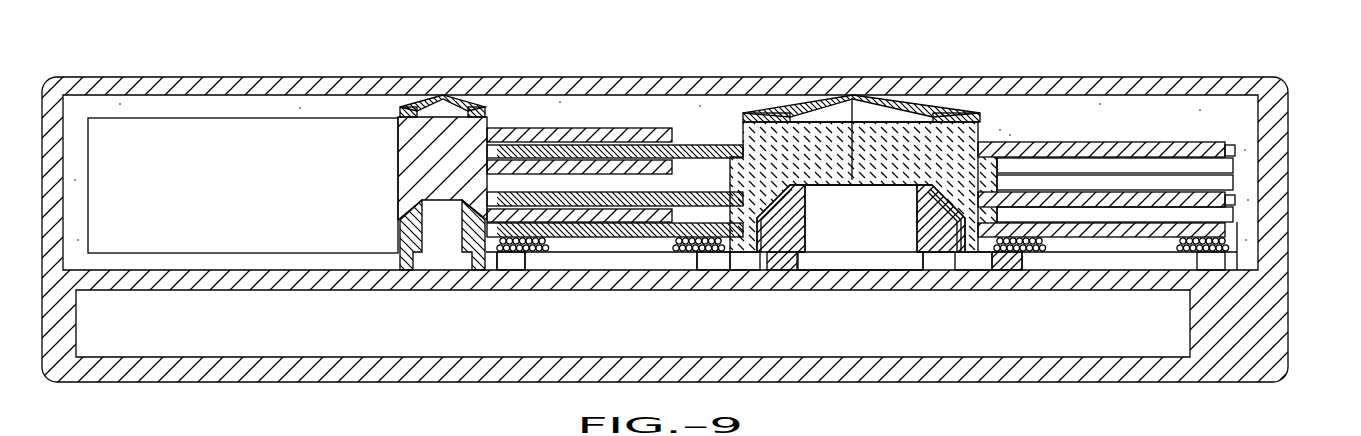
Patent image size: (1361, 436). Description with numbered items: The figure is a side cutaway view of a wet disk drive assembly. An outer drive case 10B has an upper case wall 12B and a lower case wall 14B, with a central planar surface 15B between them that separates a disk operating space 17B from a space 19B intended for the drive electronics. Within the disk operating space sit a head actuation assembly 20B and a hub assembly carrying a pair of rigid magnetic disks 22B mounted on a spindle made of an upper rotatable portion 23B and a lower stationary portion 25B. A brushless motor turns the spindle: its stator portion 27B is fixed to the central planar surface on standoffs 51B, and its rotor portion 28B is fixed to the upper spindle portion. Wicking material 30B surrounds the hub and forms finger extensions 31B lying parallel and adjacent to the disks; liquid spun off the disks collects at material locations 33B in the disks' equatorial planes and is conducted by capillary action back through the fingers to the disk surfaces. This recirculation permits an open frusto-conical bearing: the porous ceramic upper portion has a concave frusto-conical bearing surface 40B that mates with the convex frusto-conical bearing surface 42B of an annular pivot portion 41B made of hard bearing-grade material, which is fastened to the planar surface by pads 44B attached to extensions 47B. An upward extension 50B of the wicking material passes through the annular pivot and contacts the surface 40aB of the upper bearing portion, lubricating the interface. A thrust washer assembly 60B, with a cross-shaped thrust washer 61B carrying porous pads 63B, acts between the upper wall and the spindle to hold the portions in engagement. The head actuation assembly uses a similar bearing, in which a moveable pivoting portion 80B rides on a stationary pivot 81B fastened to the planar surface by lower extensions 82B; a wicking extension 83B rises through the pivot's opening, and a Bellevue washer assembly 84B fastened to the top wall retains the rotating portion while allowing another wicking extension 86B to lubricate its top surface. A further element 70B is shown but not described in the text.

The outer drive case 10B is at (699, 215).
The upper case wall 12B is at (665, 227).
The lower case wall 14B is at (427, 383).
The central planar surface 15B is at (117, 277).
The disk operating space 17B is at (230, 193).
The electronics space 19B is at (229, 340).
The head actuation assembly 20B is at (385, 176).
The rigid magnetic disks 22B is at (732, 190).
The upper rotatable spindle portion 23B is at (987, 128).
The lower stationary spindle portion 25B is at (876, 262).
The stator portion 27B is at (690, 262).
The rotor portion 28B is at (562, 232).
The wicking material 30B is at (1243, 103).
The finger extensions 31B is at (1213, 139).
The material locations 33B is at (1237, 152).
The concave frusto-conical bearing surface 40B is at (742, 136).
The surface of upper bearing portion 40aB is at (852, 98).
The annular pivot portion 41B is at (958, 220).
The convex frusto-conical bearing surface 42B is at (953, 220).
The pads 44B is at (853, 253).
The extension of the surface 47B is at (780, 262).
The upward extension of wicking material 50B is at (855, 225).
The standoffs 51B is at (510, 257).
The thrust washer assembly 60B is at (910, 94).
The cross-shaped thrust washer 61B is at (933, 113).
The porous ceramic pad 63B is at (770, 113).
The bonding pads 70B is at (758, 258).
The moveable pivoting portion 80B is at (398, 175).
The stationary pivot 81B is at (400, 237).
The lower extensions 82B is at (412, 260).
The extension of wicking material 83B is at (438, 255).
The Bellevue washer assembly 84B is at (417, 108).
The extension of wicking material 86B is at (443, 106).